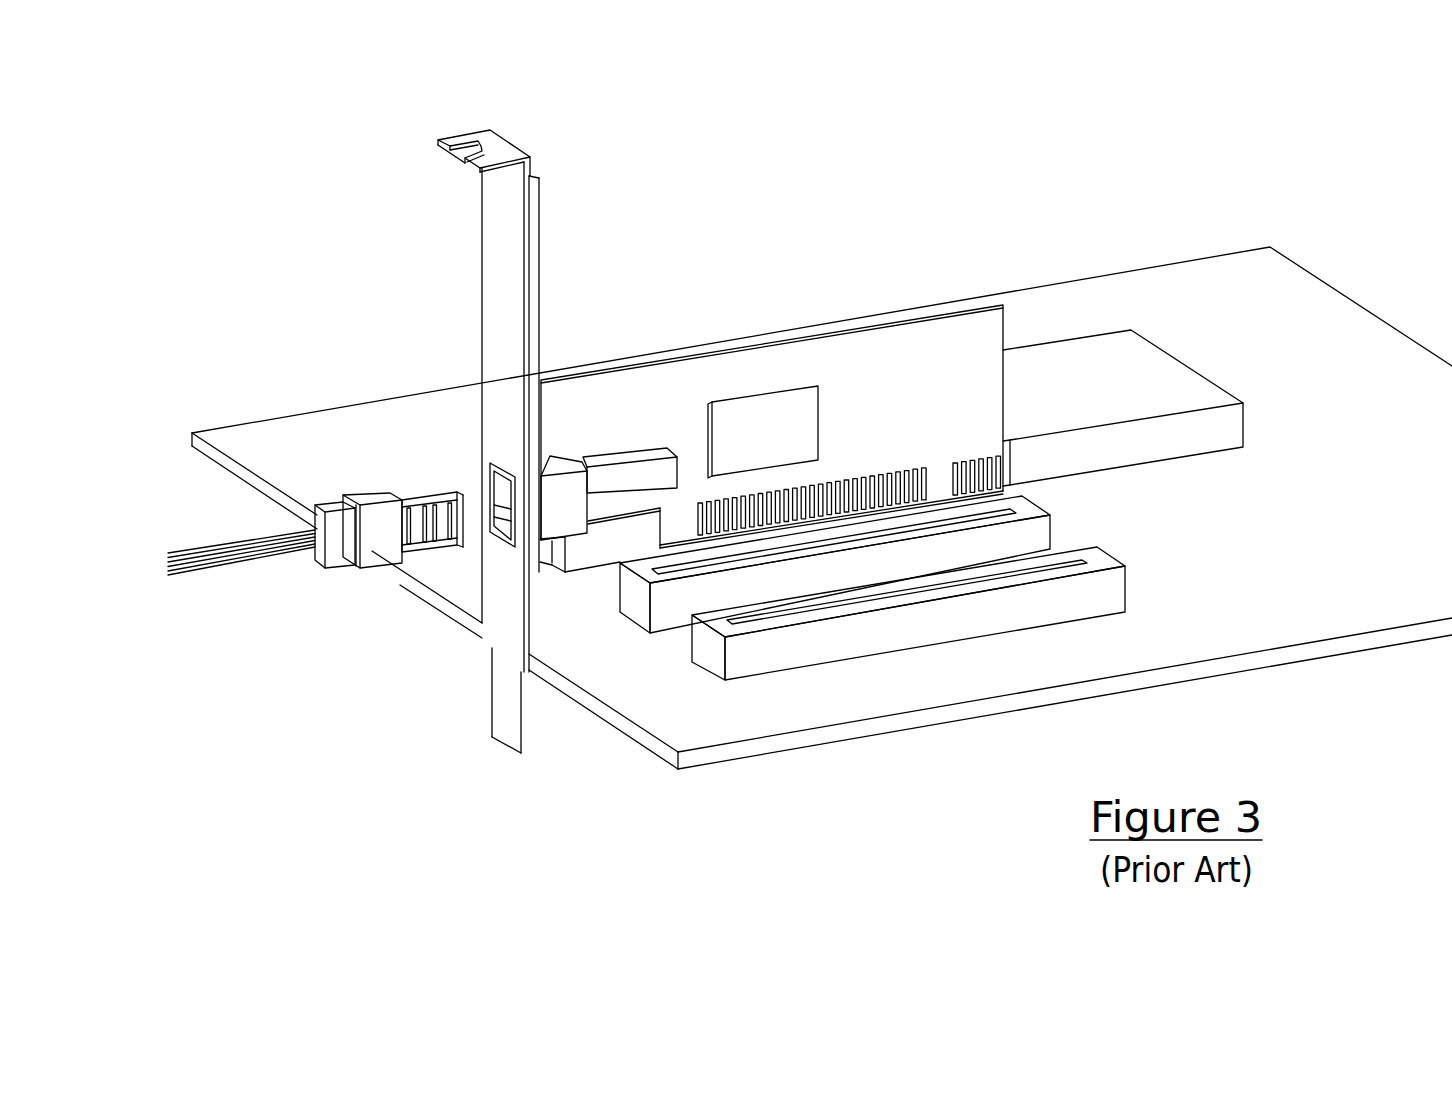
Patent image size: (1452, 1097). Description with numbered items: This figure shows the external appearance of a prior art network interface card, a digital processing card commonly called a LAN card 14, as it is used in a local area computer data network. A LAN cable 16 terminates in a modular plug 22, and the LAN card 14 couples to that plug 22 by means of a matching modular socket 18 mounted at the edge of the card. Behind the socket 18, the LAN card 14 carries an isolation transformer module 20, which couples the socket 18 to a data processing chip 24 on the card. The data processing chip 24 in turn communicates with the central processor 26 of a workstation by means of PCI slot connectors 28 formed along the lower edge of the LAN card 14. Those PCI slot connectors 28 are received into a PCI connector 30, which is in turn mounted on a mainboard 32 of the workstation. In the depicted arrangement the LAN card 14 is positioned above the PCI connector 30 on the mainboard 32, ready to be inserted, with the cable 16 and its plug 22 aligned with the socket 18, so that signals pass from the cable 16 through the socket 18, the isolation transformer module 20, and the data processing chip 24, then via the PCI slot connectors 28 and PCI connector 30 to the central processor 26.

The LAN card 14 is at (969, 402).
The LAN cable 16 is at (297, 547).
The RJ-45 socket 18 is at (556, 459).
The isolation transformer module 20 is at (615, 477).
The RJ-45 plug 22 is at (375, 518).
The data processing chip 24 is at (782, 452).
The central processor 26 is at (1102, 401).
The PCI slot connectors 28 is at (863, 470).
The PCI connector 30 is at (635, 597).
The mainboard 32 is at (842, 738).